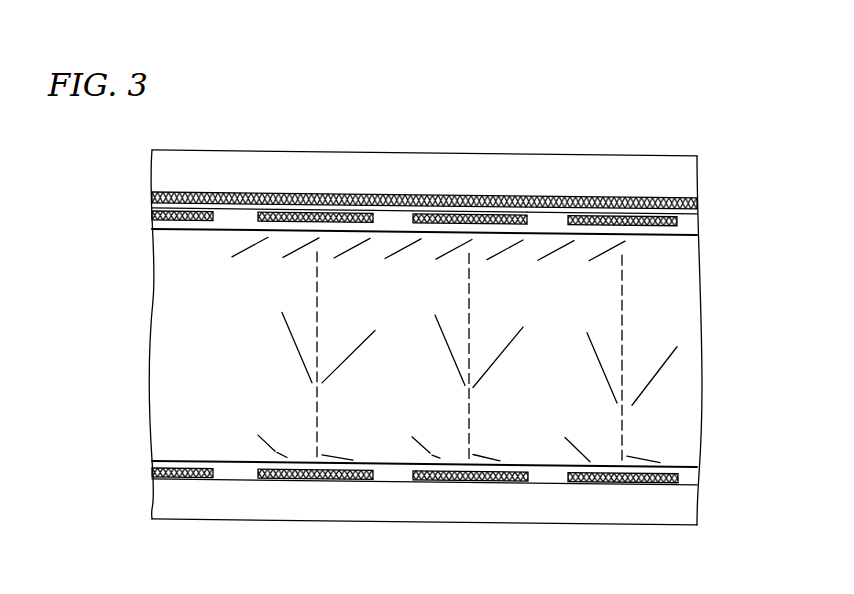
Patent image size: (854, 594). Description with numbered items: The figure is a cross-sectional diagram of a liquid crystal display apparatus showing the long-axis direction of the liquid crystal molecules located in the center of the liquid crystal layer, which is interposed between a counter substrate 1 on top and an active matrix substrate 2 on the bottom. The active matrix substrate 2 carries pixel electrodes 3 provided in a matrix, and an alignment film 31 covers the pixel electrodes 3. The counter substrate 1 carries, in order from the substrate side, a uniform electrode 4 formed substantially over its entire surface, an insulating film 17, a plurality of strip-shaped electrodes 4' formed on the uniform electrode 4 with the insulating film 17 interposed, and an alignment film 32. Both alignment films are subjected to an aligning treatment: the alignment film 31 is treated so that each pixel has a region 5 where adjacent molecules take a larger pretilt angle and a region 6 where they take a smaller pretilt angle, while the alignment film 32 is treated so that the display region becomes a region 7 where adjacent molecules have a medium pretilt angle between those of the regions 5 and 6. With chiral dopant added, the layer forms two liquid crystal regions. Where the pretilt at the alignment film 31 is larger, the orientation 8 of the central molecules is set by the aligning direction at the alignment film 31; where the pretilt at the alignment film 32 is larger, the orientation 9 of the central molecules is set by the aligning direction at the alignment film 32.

The counter substrate 1 is at (588, 170).
The active matrix substrate 2 is at (533, 496).
The pixel electrodes 3 is at (456, 475).
The uniform electrode 4 is at (424, 154).
The strip-shaped electrodes 4' is at (424, 162).
The region for a larger pretilt angle 5 is at (263, 464).
The region for a smaller pretilt angle 6 is at (330, 465).
The region with medium pretilt angle 7 is at (405, 230).
The orientation of liquid crystal molecules 8 is at (592, 343).
The orientation of liquid crystal molecules 9 is at (657, 364).
The insulating film 17 is at (533, 194).
The alignment film 31 is at (693, 464).
The alignment film 32 is at (680, 232).